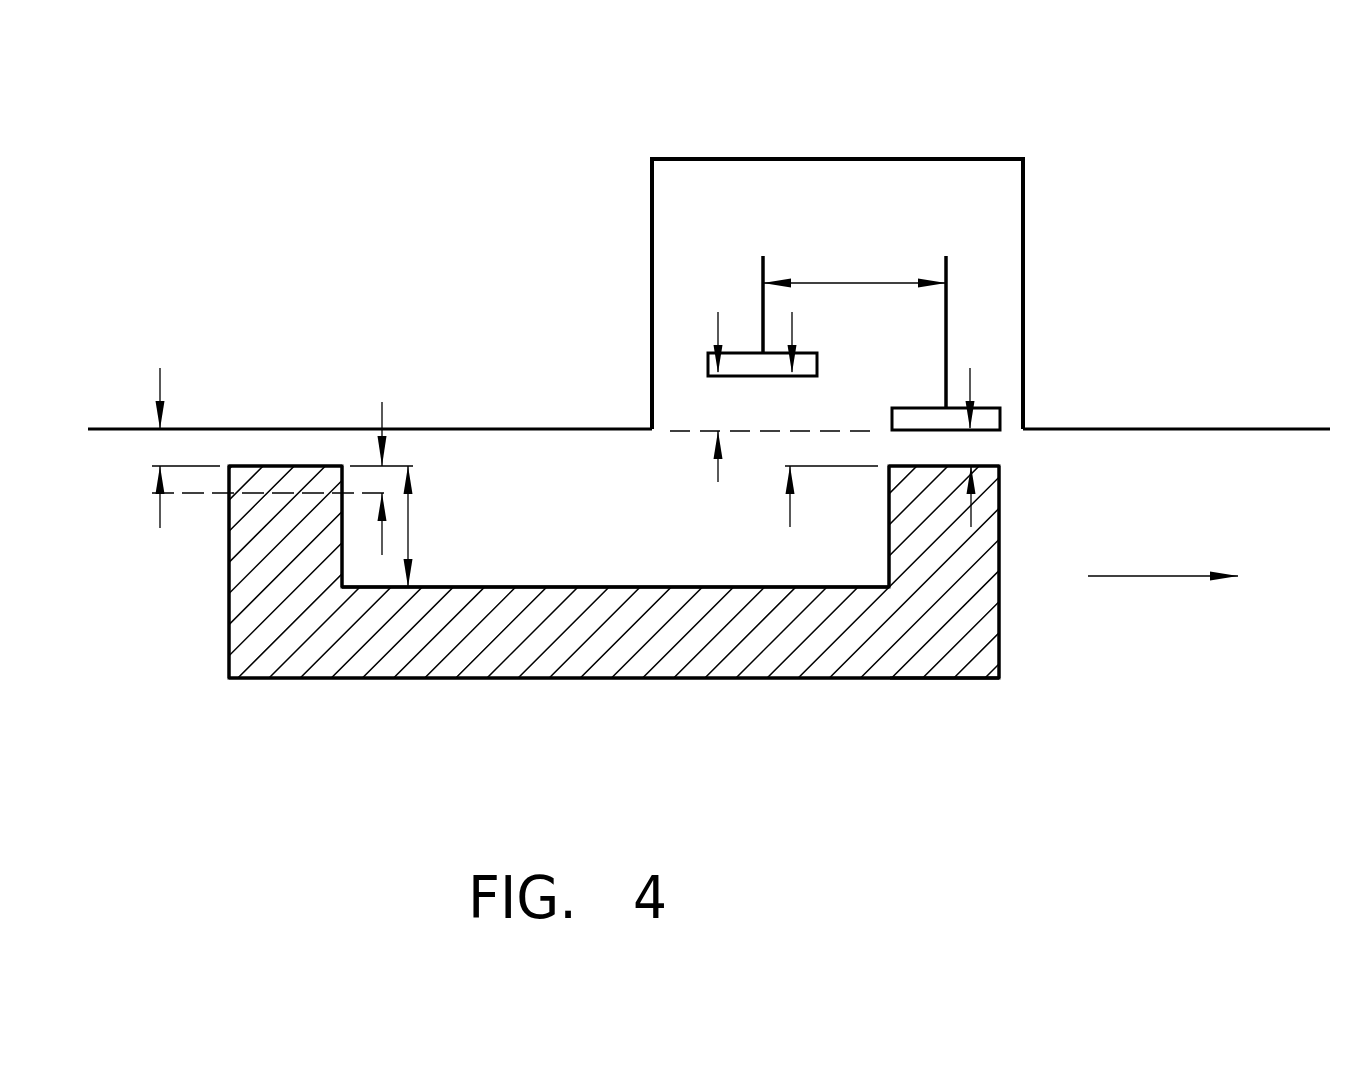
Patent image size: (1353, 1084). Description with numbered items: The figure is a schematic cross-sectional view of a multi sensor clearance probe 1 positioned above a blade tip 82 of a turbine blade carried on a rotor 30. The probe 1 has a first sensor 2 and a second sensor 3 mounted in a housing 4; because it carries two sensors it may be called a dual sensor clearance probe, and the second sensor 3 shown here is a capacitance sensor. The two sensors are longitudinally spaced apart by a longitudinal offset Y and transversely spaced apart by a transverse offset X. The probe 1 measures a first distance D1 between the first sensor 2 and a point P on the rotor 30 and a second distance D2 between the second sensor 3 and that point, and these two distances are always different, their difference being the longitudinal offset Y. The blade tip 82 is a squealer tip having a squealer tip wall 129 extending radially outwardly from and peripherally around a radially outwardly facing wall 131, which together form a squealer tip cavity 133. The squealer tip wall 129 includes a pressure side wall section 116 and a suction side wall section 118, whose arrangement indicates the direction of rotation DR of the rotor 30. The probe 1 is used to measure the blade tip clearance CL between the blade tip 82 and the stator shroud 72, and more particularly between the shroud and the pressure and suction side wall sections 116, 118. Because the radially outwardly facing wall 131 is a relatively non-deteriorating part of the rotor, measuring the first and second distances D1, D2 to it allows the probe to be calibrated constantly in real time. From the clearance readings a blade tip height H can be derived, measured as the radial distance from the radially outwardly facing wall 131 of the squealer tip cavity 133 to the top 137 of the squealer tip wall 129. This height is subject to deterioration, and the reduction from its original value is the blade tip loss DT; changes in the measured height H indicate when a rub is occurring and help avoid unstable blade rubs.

The multi sensor clearance probe 1 is at (900, 132).
The first sensor 2 is at (808, 352).
The second sensor 3 is at (925, 408).
The housing 4 is at (1024, 236).
The stator shroud 72 is at (1146, 428).
The top of the squealer tip wall 137 is at (255, 466).
The pressure side wall section 116 is at (229, 554).
The blade tip 82 is at (229, 645).
The rotor 30 is at (490, 680).
The radially outwardly facing wall 131 is at (712, 587).
The squealer tip cavity 133 is at (638, 512).
The suction side wall section 118 is at (999, 500).
The squealer tip wall 129 is at (999, 555).
The transverse offset X is at (842, 283).
The longitudinal offset Y is at (718, 327).
The first distance D1 is at (790, 510).
The second distance D2 is at (970, 385).
The blade tip loss DT is at (382, 412).
The blade tip clearance CL is at (160, 512).
The blade tip height H is at (408, 525).
The point on the rotor P is at (938, 466).
The direction of rotation DR is at (1153, 578).